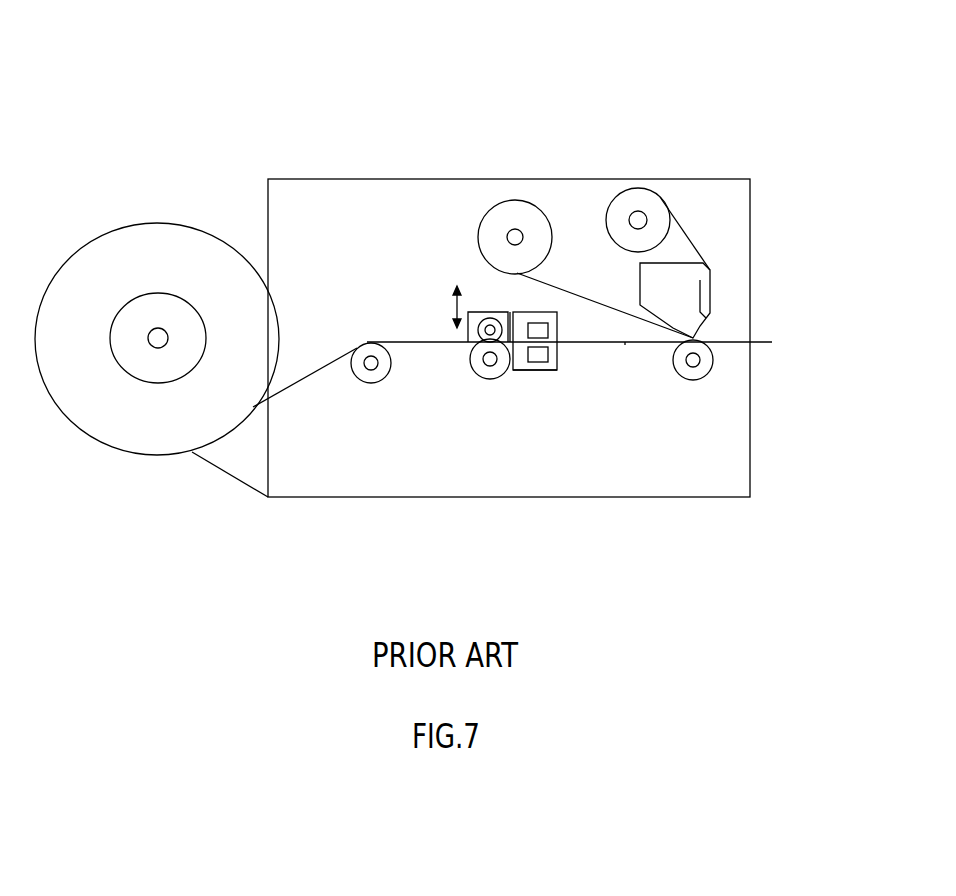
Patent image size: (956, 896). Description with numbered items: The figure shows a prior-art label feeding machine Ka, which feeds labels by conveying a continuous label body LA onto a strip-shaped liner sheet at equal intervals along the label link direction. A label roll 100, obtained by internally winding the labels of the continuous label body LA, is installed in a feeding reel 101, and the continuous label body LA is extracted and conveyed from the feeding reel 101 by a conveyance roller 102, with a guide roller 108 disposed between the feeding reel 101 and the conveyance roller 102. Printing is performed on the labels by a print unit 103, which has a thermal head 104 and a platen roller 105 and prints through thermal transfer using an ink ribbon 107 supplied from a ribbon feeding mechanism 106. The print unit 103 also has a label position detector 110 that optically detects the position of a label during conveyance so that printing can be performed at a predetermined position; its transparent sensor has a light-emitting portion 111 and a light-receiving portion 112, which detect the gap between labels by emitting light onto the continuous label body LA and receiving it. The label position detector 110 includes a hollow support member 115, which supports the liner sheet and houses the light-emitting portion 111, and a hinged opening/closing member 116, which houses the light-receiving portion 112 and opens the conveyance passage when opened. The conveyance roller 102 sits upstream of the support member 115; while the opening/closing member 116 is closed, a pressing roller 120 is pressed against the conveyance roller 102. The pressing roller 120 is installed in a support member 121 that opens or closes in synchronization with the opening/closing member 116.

The label feeding machine Ka is at (511, 252).
The label roll 100 is at (135, 240).
The feeding reel 101 is at (148, 380).
The conveyance roller 102 is at (480, 374).
The print unit 103 is at (733, 273).
The thermal head 104 is at (700, 333).
The platen roller 105 is at (703, 378).
The ribbon feeding mechanism 106 is at (513, 192).
The ink ribbon 107 is at (590, 300).
The guide roller 108 is at (357, 380).
The label position detector 110 is at (567, 471).
The light-emitting portion 111 is at (528, 363).
The light-receiving portion 112 is at (532, 322).
The support member 115 is at (517, 372).
The opening/closing member 116 is at (553, 312).
The pressing roller 120 is at (483, 328).
The support member 121 is at (477, 311).
The continuous label body LA is at (625, 344).